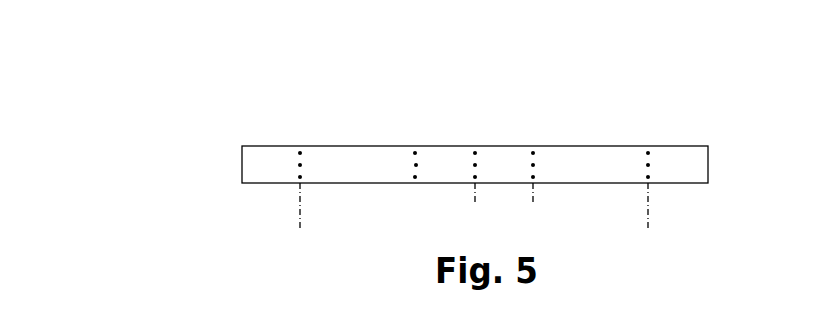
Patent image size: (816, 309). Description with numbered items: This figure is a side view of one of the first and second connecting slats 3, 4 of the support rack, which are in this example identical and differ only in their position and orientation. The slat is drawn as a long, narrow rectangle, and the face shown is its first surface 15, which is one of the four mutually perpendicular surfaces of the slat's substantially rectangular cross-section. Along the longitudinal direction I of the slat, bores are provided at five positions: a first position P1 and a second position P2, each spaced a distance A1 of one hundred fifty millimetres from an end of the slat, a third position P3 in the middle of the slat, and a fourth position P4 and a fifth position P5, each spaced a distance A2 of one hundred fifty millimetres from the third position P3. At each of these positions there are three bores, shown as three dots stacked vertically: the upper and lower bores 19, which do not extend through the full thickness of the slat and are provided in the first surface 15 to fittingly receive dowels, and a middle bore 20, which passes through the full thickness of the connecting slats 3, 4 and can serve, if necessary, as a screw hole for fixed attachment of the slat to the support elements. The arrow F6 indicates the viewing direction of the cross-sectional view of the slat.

The first connecting slat 3 is at (415, 100).
The second connecting slat 4 is at (475, 132).
The first surface 15 is at (580, 157).
The upper and lower bores 19 is at (415, 153).
The middle bores 20 is at (416, 165).
The first position P1 is at (300, 128).
The second position P2 is at (648, 128).
The third position P3 is at (475, 128).
The fourth position P4 is at (416, 128).
The fifth position P5 is at (533, 128).
The viewing direction of FIG. 6 F6 is at (160, 164).
The longitudinal direction I is at (257, 205).
The distance A1 is at (640, 228).
The distance A2 is at (525, 209).